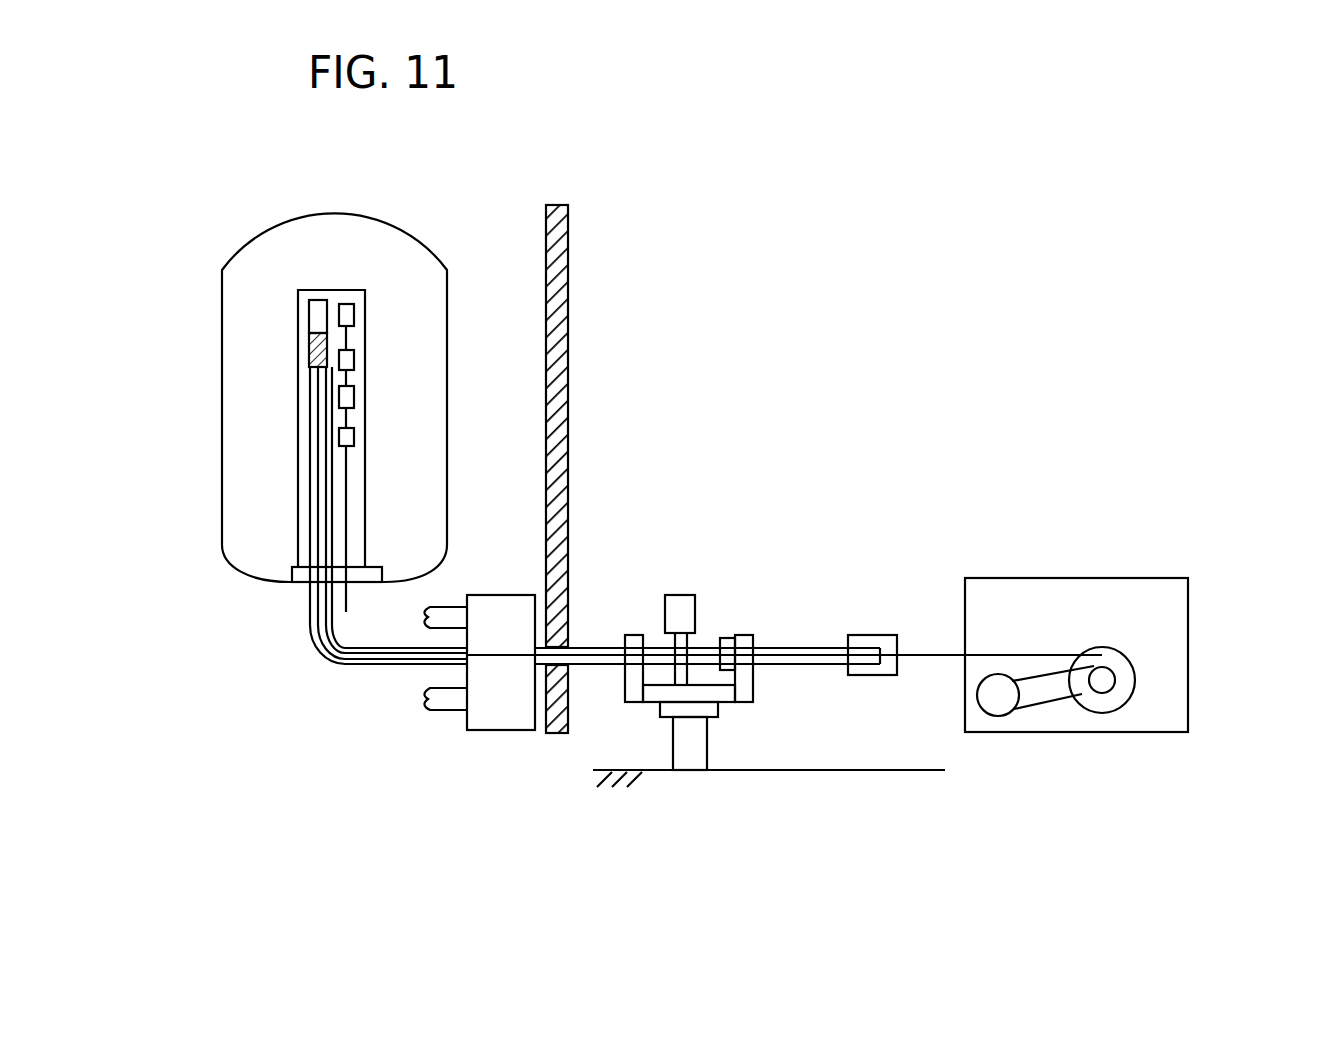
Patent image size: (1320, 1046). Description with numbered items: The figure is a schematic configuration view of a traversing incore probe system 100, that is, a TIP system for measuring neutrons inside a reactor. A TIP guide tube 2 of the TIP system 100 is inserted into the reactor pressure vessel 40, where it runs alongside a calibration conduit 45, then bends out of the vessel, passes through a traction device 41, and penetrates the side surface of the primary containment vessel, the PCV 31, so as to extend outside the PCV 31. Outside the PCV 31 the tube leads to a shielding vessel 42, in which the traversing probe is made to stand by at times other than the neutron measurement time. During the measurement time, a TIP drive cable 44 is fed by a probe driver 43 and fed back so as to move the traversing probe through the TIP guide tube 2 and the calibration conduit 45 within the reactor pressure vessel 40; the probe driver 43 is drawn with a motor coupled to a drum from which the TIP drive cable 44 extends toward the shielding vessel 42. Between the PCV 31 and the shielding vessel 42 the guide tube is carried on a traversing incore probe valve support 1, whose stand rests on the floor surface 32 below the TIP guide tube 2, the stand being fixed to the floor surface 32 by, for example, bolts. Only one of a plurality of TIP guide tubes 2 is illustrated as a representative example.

The traversing incore probe valve support 1 is at (750, 606).
The TIP guide tube 2 is at (347, 666).
The PCV 31 is at (566, 735).
The floor surface 32 is at (878, 770).
The reactor pressure vessel 40 is at (220, 345).
The traction device 41 is at (520, 594).
The shielding vessel 42 is at (858, 635).
The probe driver 43 is at (1152, 577).
The TIP drive cable 44 is at (922, 653).
The calibration conduit 45 is at (307, 458).
The TIP system 100 is at (298, 663).